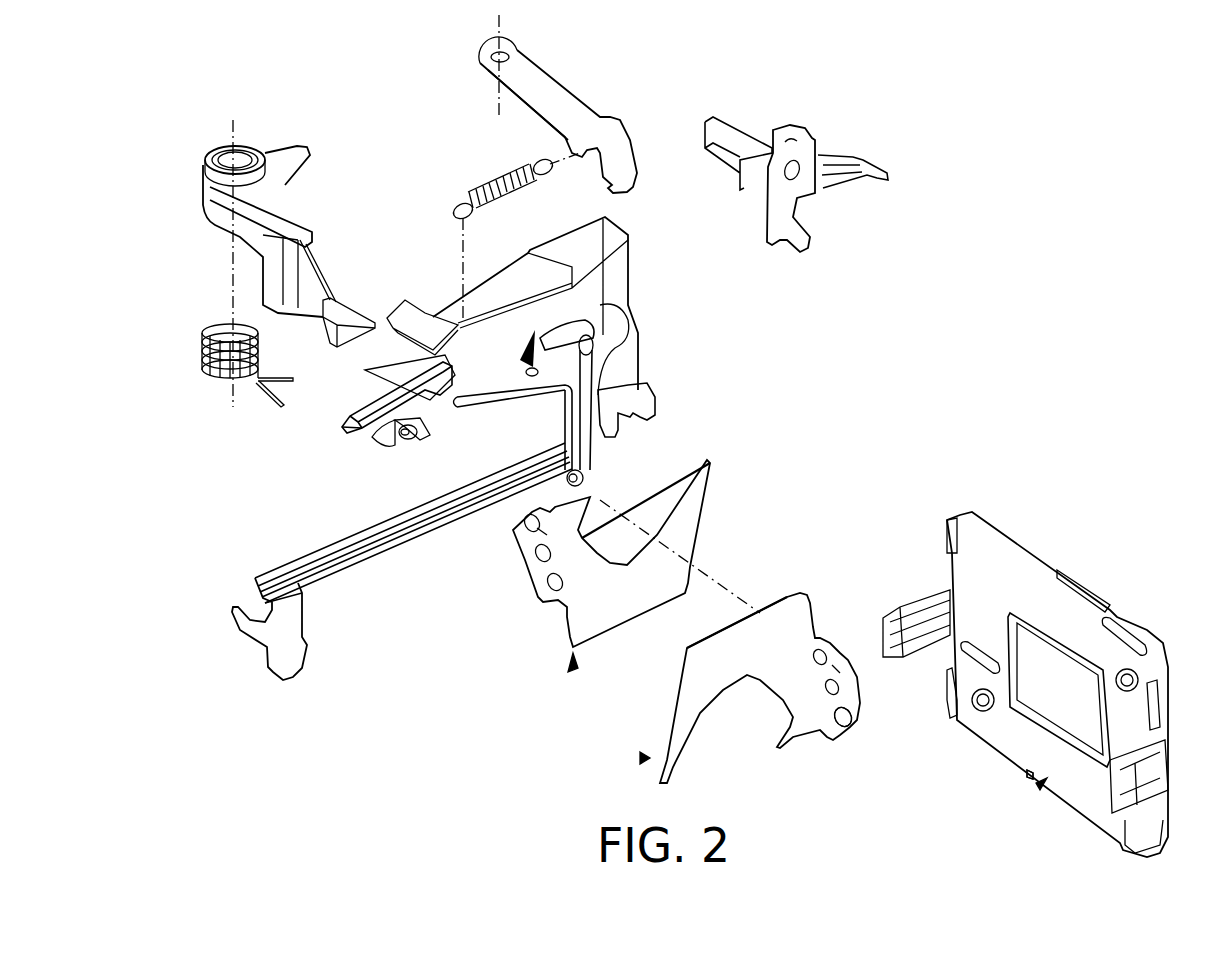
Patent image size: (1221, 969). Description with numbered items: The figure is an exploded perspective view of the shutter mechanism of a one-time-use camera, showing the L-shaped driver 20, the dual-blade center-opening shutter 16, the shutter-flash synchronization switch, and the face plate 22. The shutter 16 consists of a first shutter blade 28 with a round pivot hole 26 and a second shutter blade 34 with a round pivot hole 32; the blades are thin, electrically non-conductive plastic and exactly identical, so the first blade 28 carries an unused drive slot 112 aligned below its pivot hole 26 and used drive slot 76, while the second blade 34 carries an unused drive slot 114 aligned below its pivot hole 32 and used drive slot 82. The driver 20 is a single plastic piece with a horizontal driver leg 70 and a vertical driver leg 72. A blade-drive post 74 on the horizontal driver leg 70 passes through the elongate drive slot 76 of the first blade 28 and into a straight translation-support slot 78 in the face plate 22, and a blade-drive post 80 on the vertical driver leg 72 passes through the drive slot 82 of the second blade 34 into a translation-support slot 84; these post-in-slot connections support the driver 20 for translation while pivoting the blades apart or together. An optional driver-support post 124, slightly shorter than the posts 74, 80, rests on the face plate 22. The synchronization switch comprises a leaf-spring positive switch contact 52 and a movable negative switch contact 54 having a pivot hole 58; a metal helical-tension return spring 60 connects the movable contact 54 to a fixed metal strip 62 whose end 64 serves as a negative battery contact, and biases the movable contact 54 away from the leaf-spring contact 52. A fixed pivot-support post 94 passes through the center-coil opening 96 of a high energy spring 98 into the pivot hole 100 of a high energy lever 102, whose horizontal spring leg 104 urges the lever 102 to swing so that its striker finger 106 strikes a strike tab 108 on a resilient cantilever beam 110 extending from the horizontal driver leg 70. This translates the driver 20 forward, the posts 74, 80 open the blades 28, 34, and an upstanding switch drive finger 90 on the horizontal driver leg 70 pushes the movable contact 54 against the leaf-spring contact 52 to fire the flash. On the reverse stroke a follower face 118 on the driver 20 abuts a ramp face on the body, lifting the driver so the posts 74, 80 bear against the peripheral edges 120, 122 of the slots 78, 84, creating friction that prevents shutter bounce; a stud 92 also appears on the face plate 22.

The dual-blade center-opening shutter 16 is at (573, 656).
The L-shaped driver 20 is at (532, 366).
The face plate 22 is at (1042, 783).
The pivot hole 26 is at (537, 557).
The first shutter blade 28 is at (603, 623).
The pivot hole 32 is at (847, 673).
The second shutter blade 34 is at (692, 727).
The leaf-spring positive switch contact 52 is at (743, 130).
The movable negative switch contact 54 is at (567, 90).
The pivot hole 58 is at (487, 50).
The helical-tension return spring 60 is at (500, 177).
The metal strip 62 is at (615, 260).
The end of metal strip 64 is at (235, 620).
The horizontal driver leg 70 is at (447, 445).
The vertical driver leg 72 is at (563, 367).
The blade-drive post 74 is at (402, 443).
The drive slot 76 is at (517, 532).
The translation-support slot 78 is at (1118, 635).
The blade-drive post 80 is at (582, 473).
The drive slot 82 is at (813, 640).
The translation-support slot 84 is at (967, 653).
The switch drive finger 90 is at (627, 322).
The stud 92 is at (1087, 710).
The pivot-support post 94 is at (235, 133).
The center-coil opening 96 is at (200, 333).
The high energy spring 98 is at (202, 357).
The pivot hole 100 is at (245, 140).
The high energy lever 102 is at (223, 223).
The horizontal spring leg 104 is at (265, 403).
The striker finger 106 is at (383, 307).
The strike tab 108 is at (380, 393).
The resilient cantilever beam 110 is at (357, 427).
The unused drive slot 112 is at (547, 593).
The unused drive slot 114 is at (848, 722).
The follower face 118 is at (417, 437).
The peripheral edge of translation-support slot 120 is at (1140, 632).
The peripheral edge of translation-support slot 122 is at (970, 708).
The driver-support post 124 is at (620, 367).